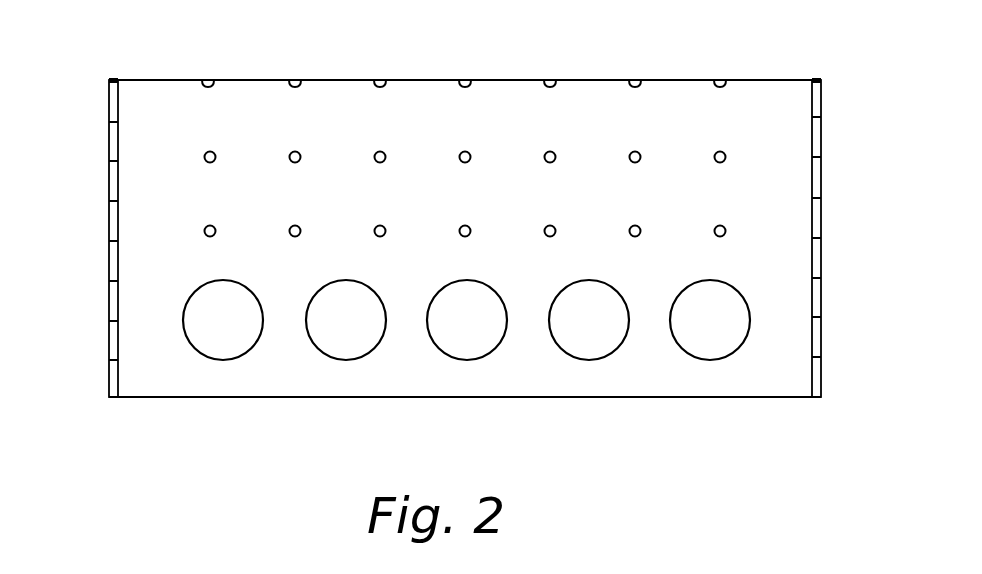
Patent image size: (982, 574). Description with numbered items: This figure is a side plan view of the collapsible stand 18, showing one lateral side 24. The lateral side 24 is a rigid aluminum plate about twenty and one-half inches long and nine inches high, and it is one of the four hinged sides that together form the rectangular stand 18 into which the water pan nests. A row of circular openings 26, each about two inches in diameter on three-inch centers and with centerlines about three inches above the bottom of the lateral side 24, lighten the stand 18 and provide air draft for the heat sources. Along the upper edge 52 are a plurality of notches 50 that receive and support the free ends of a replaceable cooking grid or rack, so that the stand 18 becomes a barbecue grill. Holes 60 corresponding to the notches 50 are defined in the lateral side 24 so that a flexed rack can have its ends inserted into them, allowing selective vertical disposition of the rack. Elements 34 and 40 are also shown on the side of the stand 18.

The collapsible stand 18 is at (295, 405).
The lateral side 24 is at (463, 230).
The openings 26 is at (360, 297).
The side rail 34 is at (112, 97).
The bottom edge 40 is at (678, 397).
The notches 50 is at (210, 88).
The upper edge 52 is at (747, 78).
The holes 60 is at (378, 152).